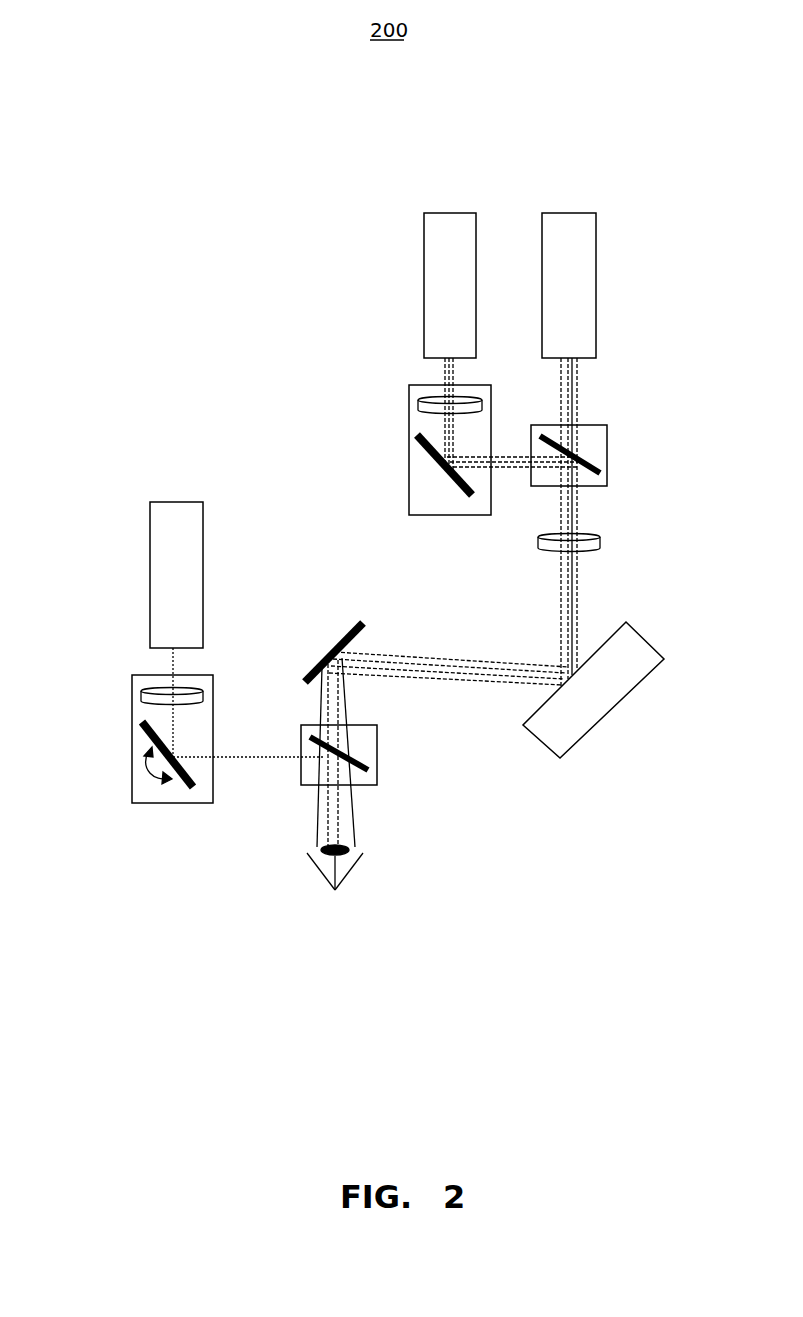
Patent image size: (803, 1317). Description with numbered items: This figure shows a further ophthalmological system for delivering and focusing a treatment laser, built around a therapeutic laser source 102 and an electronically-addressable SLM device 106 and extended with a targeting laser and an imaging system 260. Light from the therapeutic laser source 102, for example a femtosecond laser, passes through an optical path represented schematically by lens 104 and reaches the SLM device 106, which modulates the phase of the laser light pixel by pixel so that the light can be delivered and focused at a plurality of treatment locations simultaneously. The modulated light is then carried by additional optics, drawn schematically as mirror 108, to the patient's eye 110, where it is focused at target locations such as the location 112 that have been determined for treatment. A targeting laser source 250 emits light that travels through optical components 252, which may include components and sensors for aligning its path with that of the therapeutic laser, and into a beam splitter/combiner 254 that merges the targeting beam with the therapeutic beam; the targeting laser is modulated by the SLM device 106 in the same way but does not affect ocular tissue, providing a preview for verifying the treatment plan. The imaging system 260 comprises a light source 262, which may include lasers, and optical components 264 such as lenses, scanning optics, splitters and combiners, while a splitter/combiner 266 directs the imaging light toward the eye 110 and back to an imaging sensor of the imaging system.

The therapeutic laser source 102 is at (575, 212).
The lens 104 is at (538, 543).
The SLM device 106 is at (567, 759).
The mirror 108 is at (343, 620).
The eye 110 is at (306, 855).
The target location 112 is at (355, 851).
The targeting laser source 250 is at (456, 212).
The optical components 252 is at (409, 427).
The beam splitter/combiner 254 is at (607, 456).
The imaging system 260 is at (155, 470).
The light source 262 is at (150, 605).
The optical components 264 is at (132, 718).
The splitter/combiner 266 is at (377, 755).